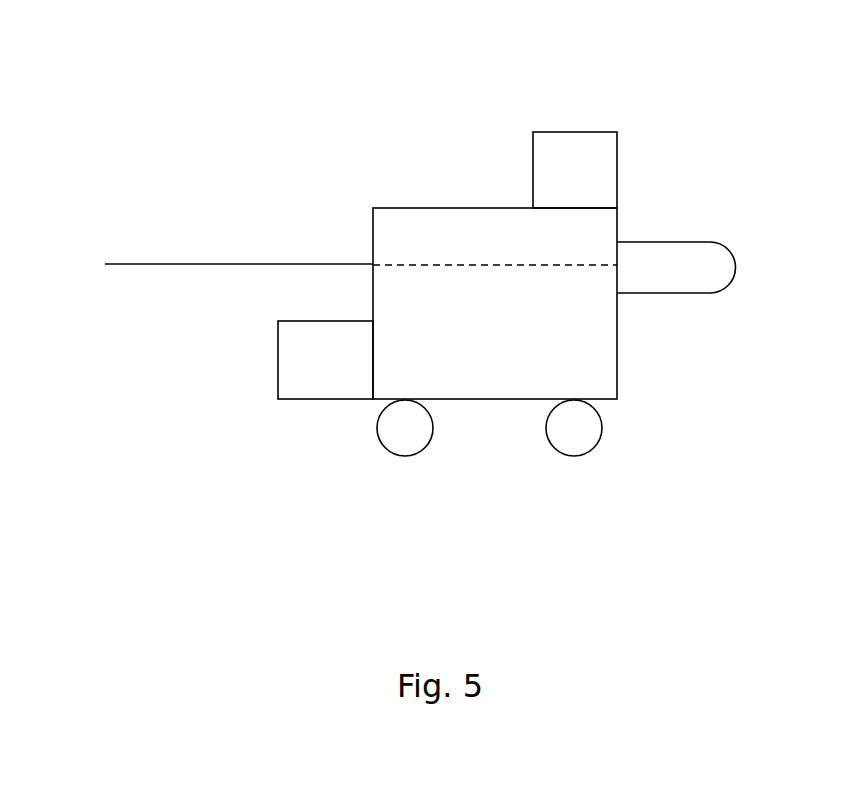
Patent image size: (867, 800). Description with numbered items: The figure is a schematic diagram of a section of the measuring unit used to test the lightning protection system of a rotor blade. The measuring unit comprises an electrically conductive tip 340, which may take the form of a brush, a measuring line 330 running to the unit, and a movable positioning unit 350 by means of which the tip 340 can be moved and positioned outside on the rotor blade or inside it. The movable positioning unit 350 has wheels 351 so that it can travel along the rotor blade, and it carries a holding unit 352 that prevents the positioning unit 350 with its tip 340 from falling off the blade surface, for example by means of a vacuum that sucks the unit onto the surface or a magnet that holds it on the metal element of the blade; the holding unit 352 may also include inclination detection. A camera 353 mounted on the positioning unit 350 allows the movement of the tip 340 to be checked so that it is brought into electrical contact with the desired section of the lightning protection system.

The measuring line 330 is at (239, 242).
The electrically conductive tip 340 is at (706, 240).
The movable positioning unit 350 is at (428, 222).
The wheels 351 is at (407, 442).
The holding unit 352 is at (335, 385).
The camera 353 is at (575, 138).